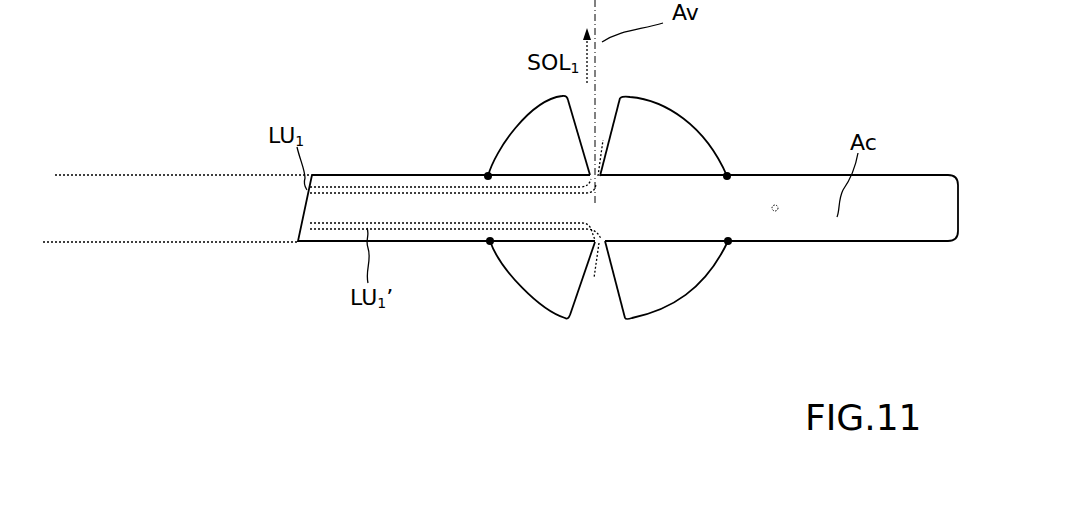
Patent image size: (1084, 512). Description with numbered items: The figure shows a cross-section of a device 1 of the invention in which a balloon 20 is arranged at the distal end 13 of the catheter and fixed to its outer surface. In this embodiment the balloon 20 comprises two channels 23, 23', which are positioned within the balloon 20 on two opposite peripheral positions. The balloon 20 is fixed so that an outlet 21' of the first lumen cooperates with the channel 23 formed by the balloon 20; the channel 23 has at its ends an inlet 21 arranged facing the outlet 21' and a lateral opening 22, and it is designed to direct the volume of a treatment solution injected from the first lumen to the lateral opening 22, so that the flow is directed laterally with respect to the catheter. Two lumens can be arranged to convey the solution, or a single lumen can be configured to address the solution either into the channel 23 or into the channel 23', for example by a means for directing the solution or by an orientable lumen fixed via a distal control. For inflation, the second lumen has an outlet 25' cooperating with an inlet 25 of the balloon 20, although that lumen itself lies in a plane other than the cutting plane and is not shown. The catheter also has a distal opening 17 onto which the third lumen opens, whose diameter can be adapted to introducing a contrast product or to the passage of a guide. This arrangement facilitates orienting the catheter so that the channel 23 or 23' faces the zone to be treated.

The device 1 is at (431, 80).
The distal end 13 is at (732, 262).
The distal opening 17 is at (777, 210).
The balloon 20 is at (527, 135).
The inlet 21 is at (628, 137).
The outlet 21' is at (619, 150).
The lateral opening 22 is at (602, 100).
The channel 23 is at (662, 136).
The channel 23' is at (655, 308).
The inlet 25 is at (568, 278).
The outlet 25' is at (641, 270).